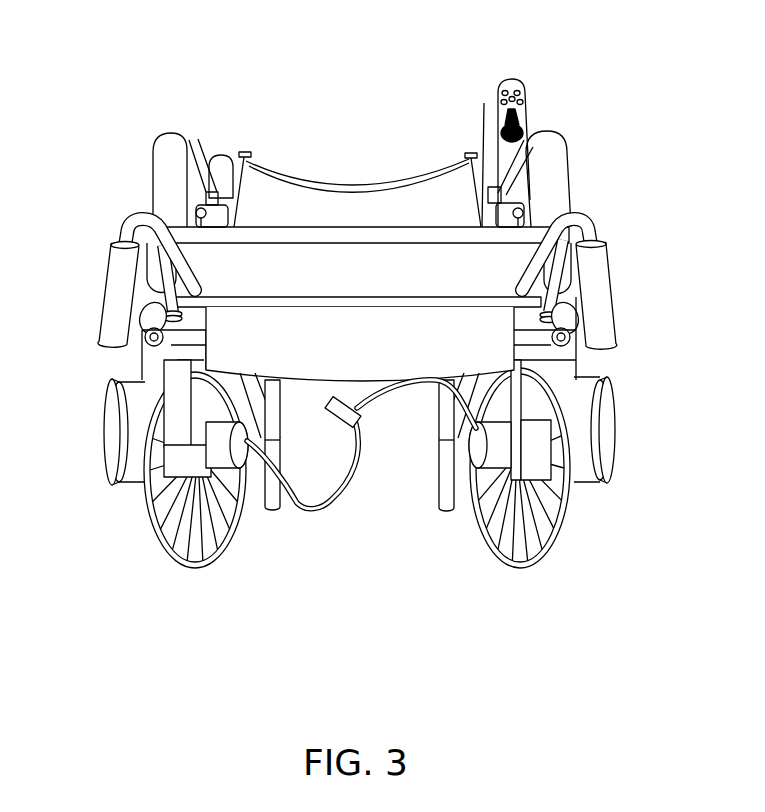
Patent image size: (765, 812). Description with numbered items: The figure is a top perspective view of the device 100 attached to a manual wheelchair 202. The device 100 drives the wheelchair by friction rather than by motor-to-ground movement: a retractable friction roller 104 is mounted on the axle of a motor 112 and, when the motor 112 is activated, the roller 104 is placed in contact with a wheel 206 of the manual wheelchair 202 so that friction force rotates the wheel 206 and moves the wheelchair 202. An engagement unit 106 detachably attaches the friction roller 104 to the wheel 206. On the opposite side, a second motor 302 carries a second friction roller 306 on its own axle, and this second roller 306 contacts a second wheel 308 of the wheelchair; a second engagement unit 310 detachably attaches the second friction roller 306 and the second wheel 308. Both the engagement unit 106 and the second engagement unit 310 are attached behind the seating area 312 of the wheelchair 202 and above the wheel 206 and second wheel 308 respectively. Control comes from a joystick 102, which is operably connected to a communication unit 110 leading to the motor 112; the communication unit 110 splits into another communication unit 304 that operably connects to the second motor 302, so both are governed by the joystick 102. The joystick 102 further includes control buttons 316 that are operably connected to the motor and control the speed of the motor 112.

The device 100 is at (407, 484).
The joystick 102 is at (514, 110).
The retractable friction roller 104 is at (589, 432).
The engagement unit 106 is at (593, 365).
The communication unit 110 is at (435, 388).
The motor 112 is at (490, 460).
The manual wheelchair 202 is at (215, 235).
The wheel 206 is at (541, 572).
The second motor 302 is at (160, 527).
The another communication unit 304 is at (297, 512).
The second friction roller 306 is at (110, 420).
The second wheel 308 is at (160, 493).
The second engagement unit 310 is at (125, 367).
The seating area 312 is at (319, 180).
The control buttons 316 is at (519, 82).